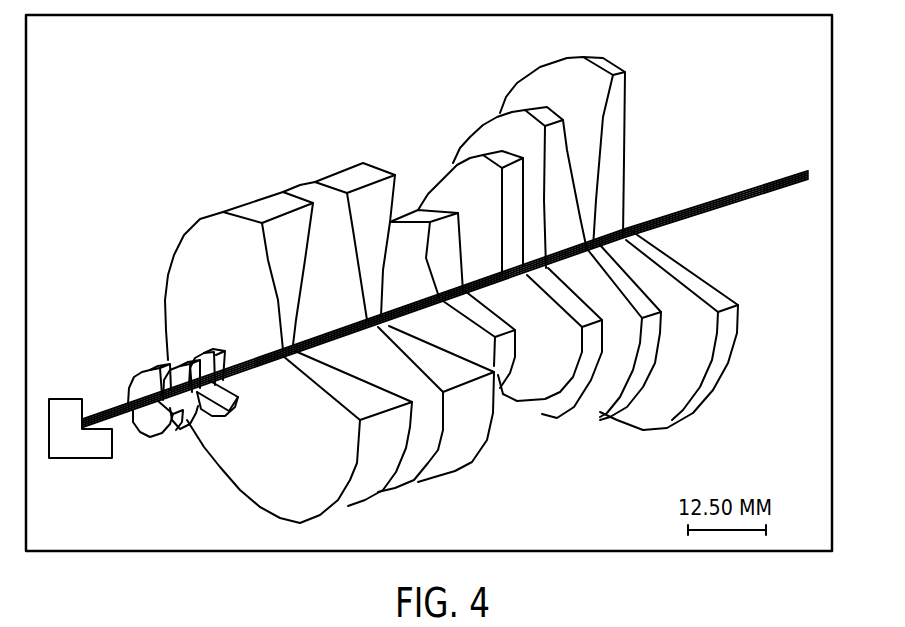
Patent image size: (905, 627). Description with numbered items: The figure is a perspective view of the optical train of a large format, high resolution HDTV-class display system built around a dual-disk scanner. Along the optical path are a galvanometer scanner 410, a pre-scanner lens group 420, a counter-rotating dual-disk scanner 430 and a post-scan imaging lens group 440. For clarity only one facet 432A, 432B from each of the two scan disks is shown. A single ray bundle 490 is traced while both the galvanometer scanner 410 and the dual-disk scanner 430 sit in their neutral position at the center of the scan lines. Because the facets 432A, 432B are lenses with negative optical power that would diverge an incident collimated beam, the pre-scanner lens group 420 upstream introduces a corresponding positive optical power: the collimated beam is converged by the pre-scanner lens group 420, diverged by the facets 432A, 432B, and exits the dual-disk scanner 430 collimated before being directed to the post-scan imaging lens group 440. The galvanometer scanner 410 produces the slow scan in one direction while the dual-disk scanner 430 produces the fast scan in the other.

The galvanometer scanner 410 is at (80, 458).
The pre-scanner lens group 420 is at (217, 337).
The counter-rotating dual-disk scanner 430 is at (352, 323).
The facet 432A is at (352, 502).
The facet 432B is at (455, 470).
The post-scan imaging lens group 440 is at (598, 41).
The ray bundle 490 is at (762, 170).